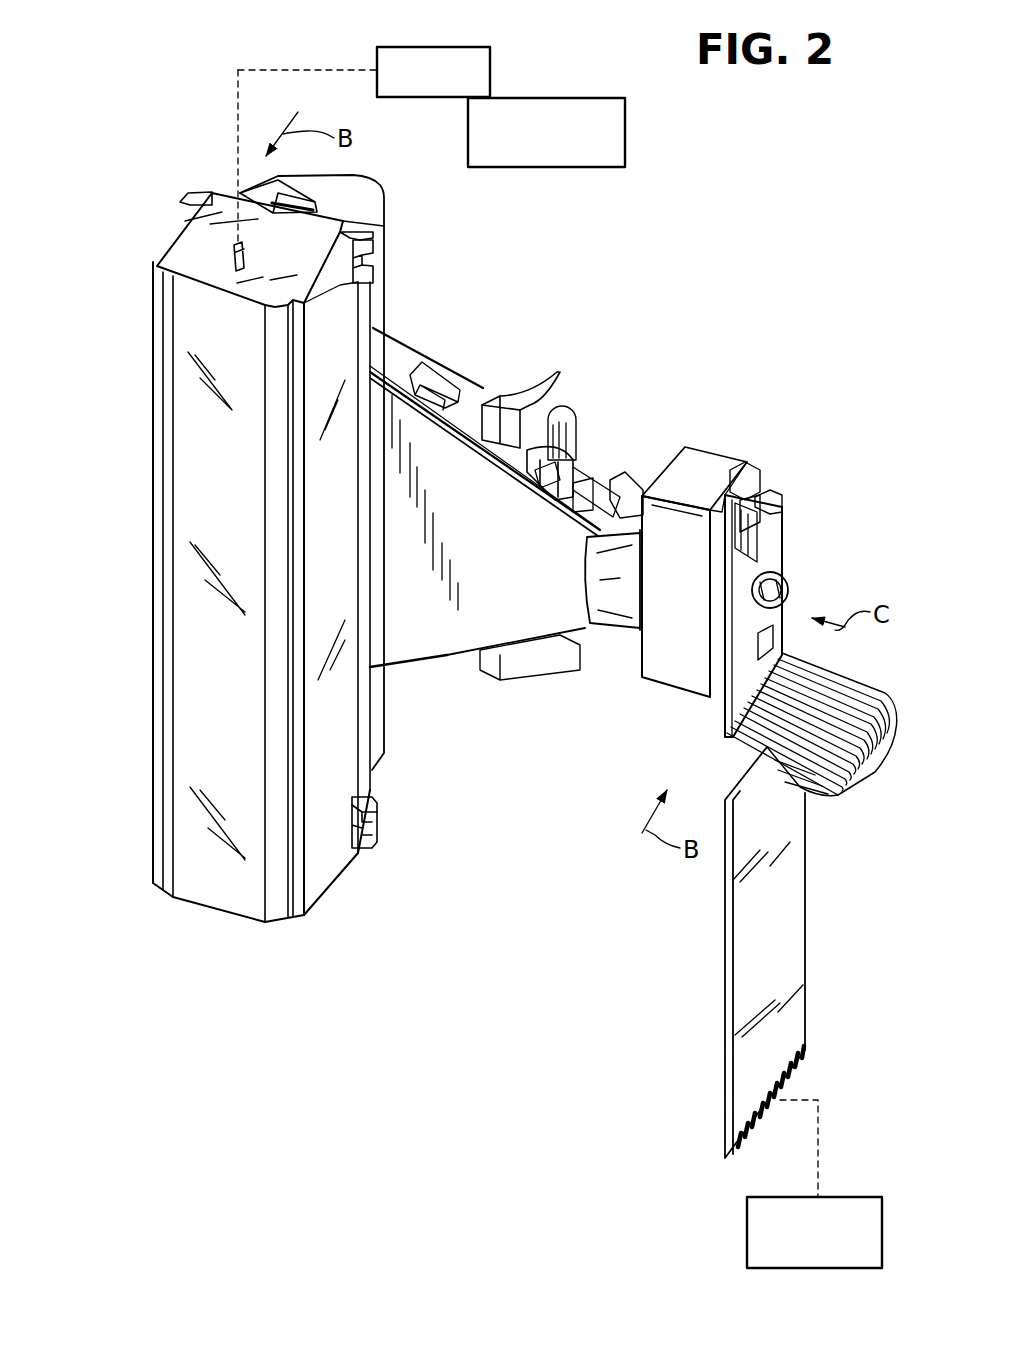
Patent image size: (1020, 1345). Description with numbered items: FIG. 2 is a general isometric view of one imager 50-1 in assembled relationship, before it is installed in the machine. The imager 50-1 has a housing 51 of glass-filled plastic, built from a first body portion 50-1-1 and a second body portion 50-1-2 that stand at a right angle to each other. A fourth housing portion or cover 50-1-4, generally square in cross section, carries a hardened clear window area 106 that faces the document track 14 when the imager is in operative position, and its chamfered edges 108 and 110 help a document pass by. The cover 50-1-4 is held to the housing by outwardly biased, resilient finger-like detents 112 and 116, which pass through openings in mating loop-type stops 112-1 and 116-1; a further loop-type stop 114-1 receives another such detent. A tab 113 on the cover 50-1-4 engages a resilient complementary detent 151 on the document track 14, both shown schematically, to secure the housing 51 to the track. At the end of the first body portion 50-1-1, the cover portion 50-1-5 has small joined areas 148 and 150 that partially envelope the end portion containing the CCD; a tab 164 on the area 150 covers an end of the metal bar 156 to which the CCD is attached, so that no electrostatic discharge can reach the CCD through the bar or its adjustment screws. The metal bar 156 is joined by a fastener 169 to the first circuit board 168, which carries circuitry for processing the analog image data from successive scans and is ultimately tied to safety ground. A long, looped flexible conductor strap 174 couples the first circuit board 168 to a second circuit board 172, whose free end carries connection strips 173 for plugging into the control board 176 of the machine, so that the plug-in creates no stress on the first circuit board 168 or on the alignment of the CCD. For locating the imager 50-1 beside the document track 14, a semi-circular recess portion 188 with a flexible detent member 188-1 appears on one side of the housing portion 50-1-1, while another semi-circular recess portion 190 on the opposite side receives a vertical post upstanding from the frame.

The document track 14 is at (590, 167).
The detent 151 is at (433, 47).
The imager 50-1 is at (116, 426).
The first body portion 50-1-1 is at (472, 384).
The second body portion 50-1-2 is at (380, 212).
The cover 50-1-4 is at (190, 628).
The cover portion 50-1-5 is at (482, 590).
The housing 51 is at (395, 612).
The clear window area 106 is at (195, 762).
The chamfered edge 108 is at (278, 912).
The chamfered edge 110 is at (173, 890).
The finger-like detent 112 is at (373, 270).
The loop-type stop 112-1 is at (373, 250).
The tab 113 is at (234, 250).
The loop-type stop 114-1 is at (183, 198).
The finger-like detent 116 is at (373, 840).
The loop-type stop 116-1 is at (376, 812).
The joined area 148 is at (680, 672).
The joined area 150 is at (707, 460).
The metal bar 156 is at (772, 503).
The tab 164 is at (745, 470).
The first circuit board 168 is at (778, 546).
The fastener 169 is at (792, 588).
The second circuit board 172 is at (752, 947).
The connection strips 173 is at (742, 1124).
The flexible conductor strap 174 is at (842, 800).
The control board 176 is at (747, 1222).
The semi-circular recess portion 188 is at (565, 418).
The flexible detent member 188-1 is at (533, 468).
The semi-circular recess portion 190 is at (547, 657).